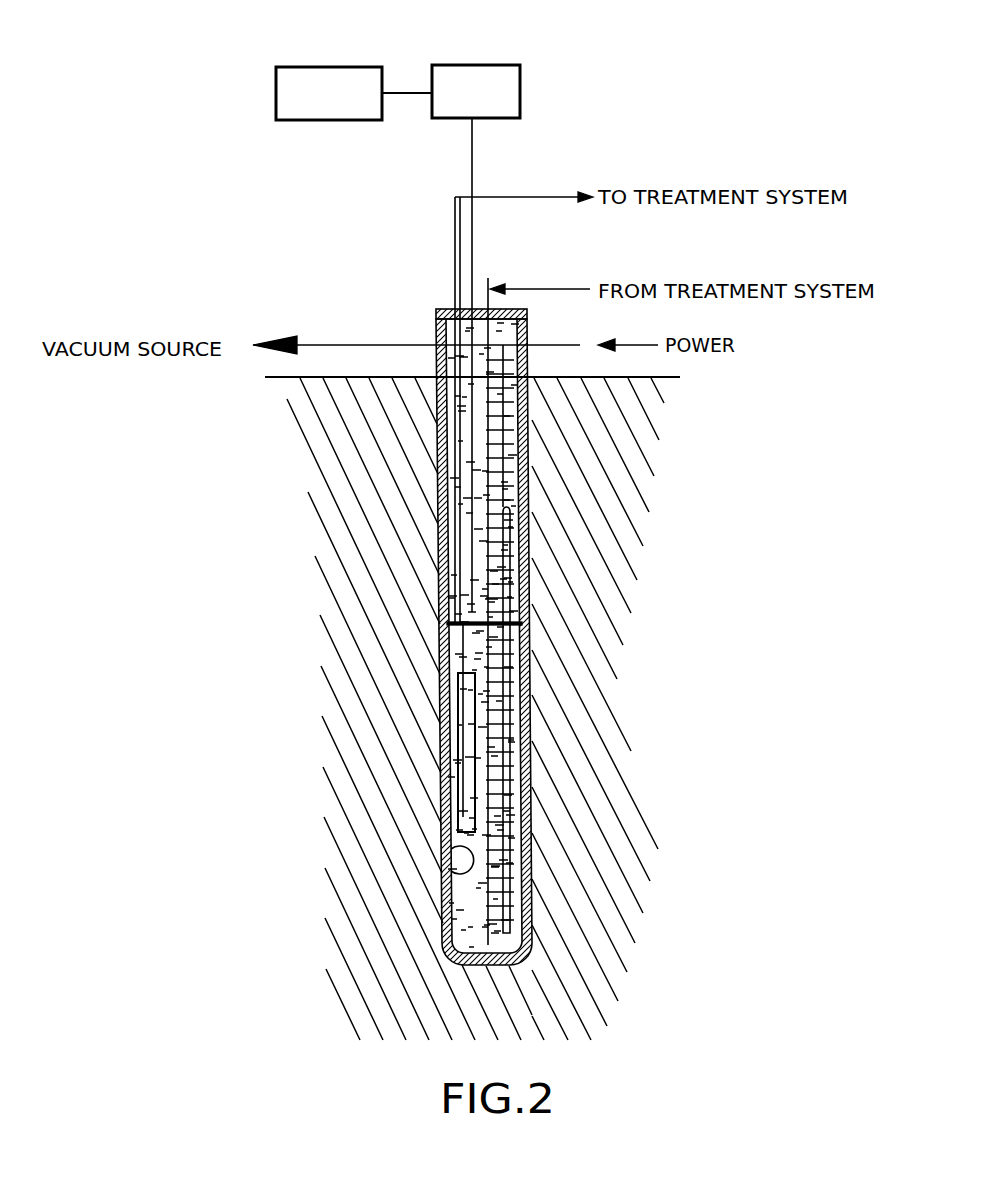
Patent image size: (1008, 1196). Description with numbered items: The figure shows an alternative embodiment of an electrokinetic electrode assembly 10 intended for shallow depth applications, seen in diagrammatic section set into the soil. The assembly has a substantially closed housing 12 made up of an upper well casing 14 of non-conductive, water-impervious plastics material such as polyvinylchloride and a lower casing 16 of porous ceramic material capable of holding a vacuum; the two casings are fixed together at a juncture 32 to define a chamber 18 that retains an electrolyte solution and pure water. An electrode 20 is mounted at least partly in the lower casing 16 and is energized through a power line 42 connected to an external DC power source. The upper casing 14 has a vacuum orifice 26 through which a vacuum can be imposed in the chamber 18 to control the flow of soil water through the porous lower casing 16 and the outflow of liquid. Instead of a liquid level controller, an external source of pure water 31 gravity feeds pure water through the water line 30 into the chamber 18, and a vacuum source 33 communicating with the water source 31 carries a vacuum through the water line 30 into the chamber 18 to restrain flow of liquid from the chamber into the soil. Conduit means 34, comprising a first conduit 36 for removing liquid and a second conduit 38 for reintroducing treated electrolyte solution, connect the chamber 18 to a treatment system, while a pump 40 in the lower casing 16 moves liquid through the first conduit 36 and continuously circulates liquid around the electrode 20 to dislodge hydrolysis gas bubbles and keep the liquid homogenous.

The electrokinetic electrode assembly 10 is at (371, 293).
The housing 12 is at (530, 425).
The upper well casing 14 is at (530, 456).
The lower casing 16 is at (531, 674).
The chamber 18 is at (505, 487).
The electrode 20 is at (512, 525).
The vacuum orifice 26 is at (453, 318).
The make-up water line 30 is at (475, 143).
The external source of pure water 31 is at (442, 65).
The juncture 32 is at (522, 623).
The vacuum source 33 is at (318, 67).
The conduit means 34 is at (450, 437).
The first conduit 36 is at (442, 498).
The second conduit 38 is at (490, 305).
The pump 40 is at (455, 690).
The power line 42 is at (518, 355).